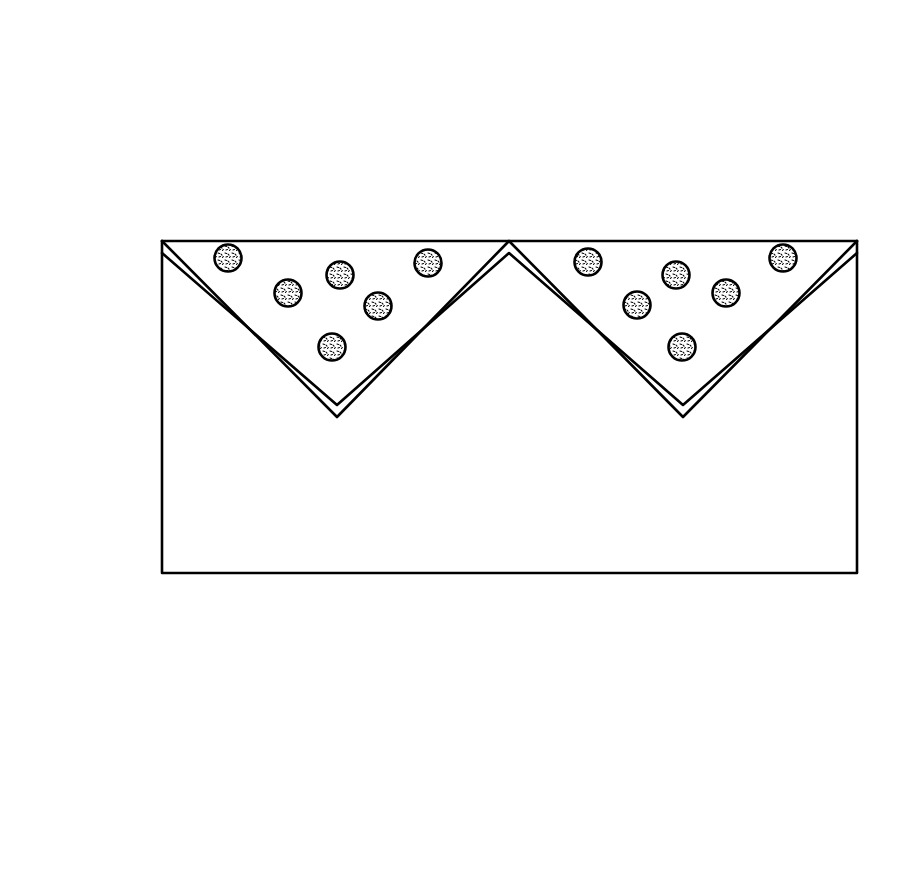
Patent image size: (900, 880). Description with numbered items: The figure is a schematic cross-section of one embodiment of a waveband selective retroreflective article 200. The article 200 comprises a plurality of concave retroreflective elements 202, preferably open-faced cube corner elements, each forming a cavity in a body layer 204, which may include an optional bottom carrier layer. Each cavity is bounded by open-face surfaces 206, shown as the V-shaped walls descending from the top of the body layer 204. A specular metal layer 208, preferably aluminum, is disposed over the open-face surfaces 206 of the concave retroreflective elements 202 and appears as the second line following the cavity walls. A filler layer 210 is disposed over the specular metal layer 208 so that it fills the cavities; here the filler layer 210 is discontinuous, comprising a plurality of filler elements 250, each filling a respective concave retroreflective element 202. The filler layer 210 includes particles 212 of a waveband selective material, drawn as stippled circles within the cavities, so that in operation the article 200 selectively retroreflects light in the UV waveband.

The waveband selective retroreflective article 200 is at (158, 94).
The concave retroreflective element 202 is at (240, 201).
The body layer 204 is at (168, 472).
The open-face surfaces 206 is at (245, 313).
The specular metal layer 208 is at (298, 378).
The filler layer 210 is at (328, 252).
The particles 212 is at (378, 320).
The filler element 250 is at (424, 230).